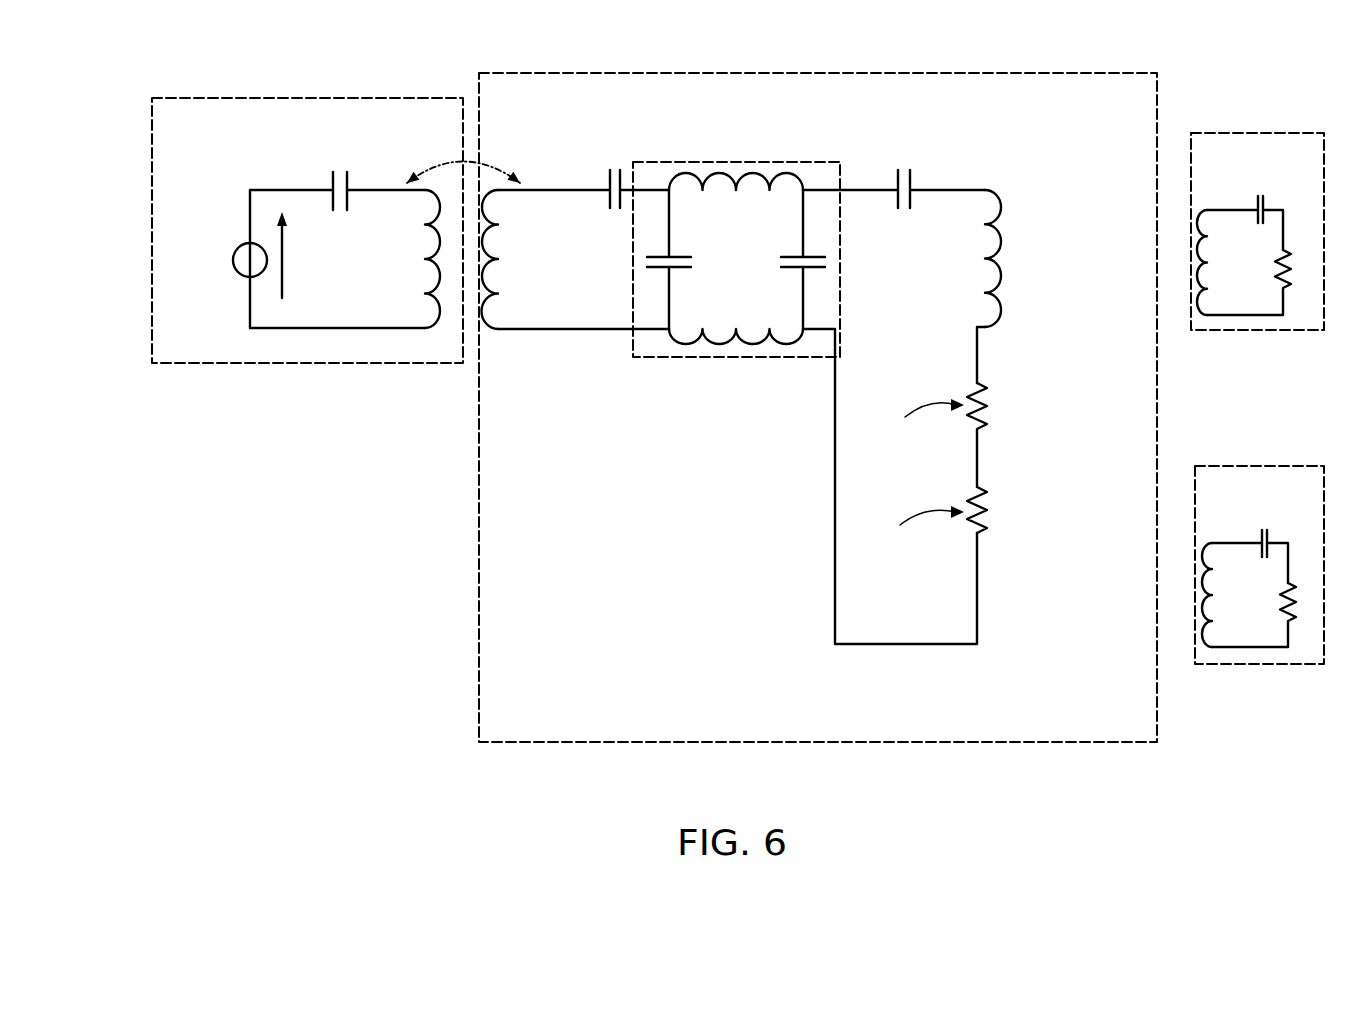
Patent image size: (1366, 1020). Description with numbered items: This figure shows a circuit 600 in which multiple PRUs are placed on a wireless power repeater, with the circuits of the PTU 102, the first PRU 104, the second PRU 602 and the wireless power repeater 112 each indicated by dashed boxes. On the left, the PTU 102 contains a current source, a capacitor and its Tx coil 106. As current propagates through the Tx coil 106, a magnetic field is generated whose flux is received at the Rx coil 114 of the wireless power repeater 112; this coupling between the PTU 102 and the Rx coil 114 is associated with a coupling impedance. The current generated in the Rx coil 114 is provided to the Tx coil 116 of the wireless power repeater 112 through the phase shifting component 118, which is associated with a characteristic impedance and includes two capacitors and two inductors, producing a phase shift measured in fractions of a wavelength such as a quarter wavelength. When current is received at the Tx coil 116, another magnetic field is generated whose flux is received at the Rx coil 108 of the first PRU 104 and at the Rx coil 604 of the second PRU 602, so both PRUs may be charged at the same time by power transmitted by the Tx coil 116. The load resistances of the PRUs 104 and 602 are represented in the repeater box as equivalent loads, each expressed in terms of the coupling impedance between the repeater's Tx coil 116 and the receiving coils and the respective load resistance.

The PTU 102 is at (307, 270).
The PRU 104 is at (1248, 133).
The Tx coil 106 is at (430, 295).
The Rx coil 108 is at (1200, 293).
The wireless power repeater 112 is at (542, 73).
The Rx coil 114 is at (490, 293).
The Tx coil 116 is at (1000, 262).
The phase shifting component 118 is at (720, 358).
The wireless power transfer system 600 is at (750, 802).
The second PRU 602 is at (1238, 466).
The Rx coil 604 is at (1205, 623).